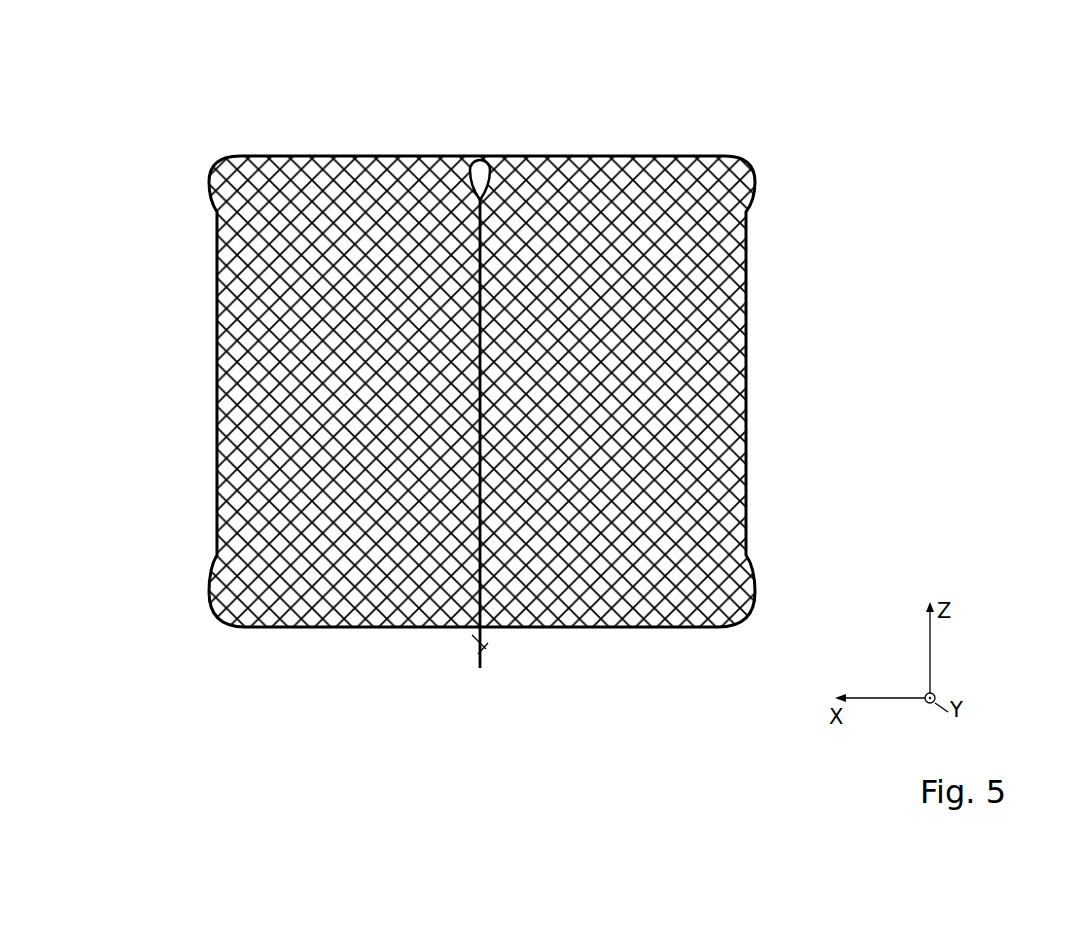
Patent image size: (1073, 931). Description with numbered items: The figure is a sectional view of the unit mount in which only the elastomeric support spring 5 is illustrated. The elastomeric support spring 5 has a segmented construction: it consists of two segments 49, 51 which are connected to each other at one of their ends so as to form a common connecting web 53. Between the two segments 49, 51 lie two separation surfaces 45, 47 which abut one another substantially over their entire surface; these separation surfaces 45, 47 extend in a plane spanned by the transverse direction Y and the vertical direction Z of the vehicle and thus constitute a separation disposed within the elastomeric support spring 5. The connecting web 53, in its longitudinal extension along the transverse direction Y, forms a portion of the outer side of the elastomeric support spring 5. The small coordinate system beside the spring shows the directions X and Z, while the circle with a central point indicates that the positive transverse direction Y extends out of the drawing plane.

The elastomeric support spring 5 is at (364, 157).
The connecting web 53 is at (495, 156).
The segment 51 is at (368, 565).
The segment 49 is at (583, 565).
The separation surface 45 is at (477, 637).
The separation surface 47 is at (483, 647).